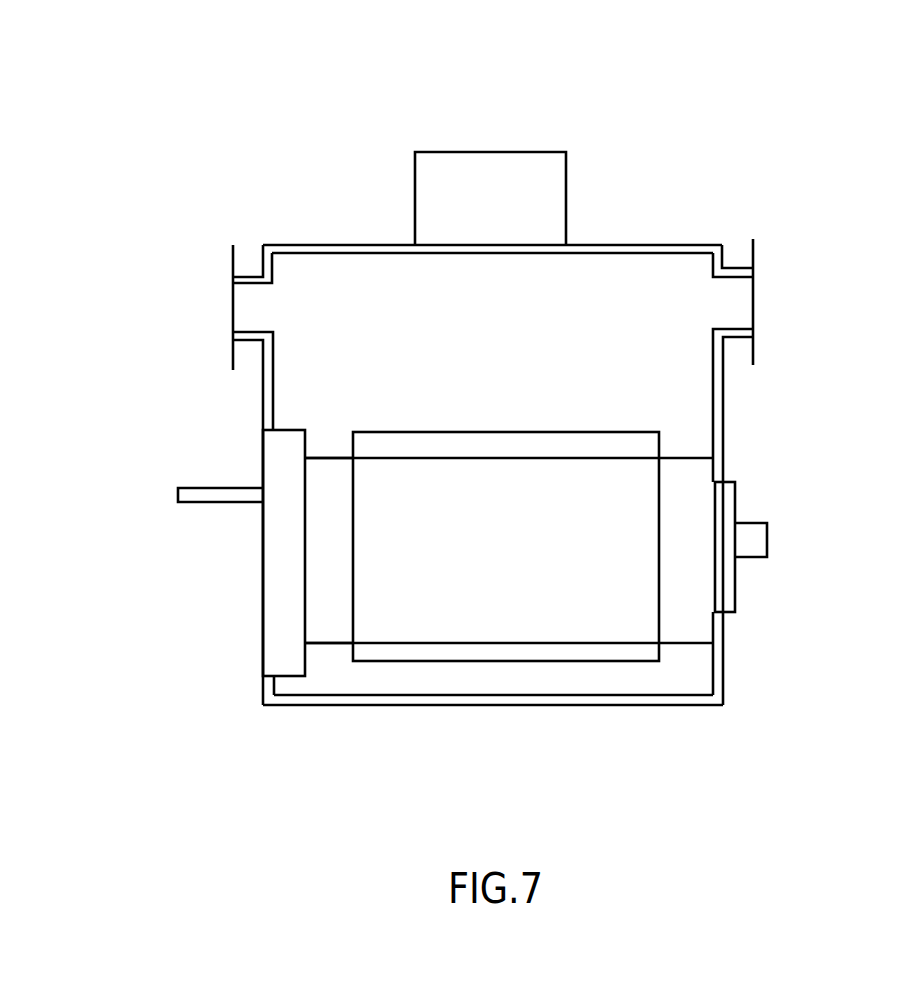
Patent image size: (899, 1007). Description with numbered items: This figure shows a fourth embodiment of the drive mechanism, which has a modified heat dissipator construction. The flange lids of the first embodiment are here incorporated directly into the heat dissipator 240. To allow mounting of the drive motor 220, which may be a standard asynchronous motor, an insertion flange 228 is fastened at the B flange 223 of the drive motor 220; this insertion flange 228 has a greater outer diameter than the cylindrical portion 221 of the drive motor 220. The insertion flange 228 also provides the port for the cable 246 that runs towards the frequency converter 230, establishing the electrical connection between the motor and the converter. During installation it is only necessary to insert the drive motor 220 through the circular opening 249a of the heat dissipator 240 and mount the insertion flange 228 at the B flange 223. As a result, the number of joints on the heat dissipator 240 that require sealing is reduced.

The drive motor 220 is at (603, 420).
The cylindrical portion 221 is at (515, 652).
The B flange 223 is at (323, 617).
The insertion flange 228 is at (282, 628).
The frequency converter 230 is at (477, 183).
The heat dissipator 240 is at (715, 703).
The cable 246 is at (210, 495).
The circular opening 249a is at (728, 480).